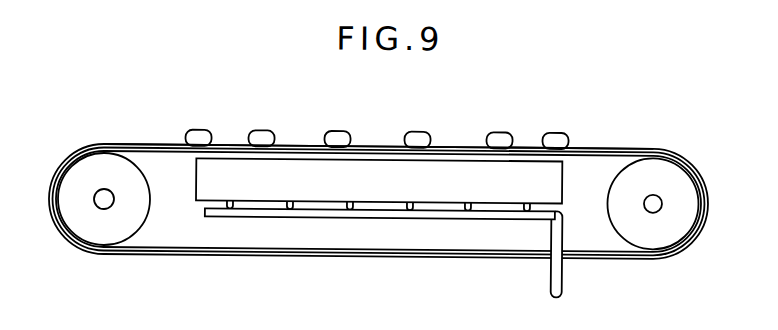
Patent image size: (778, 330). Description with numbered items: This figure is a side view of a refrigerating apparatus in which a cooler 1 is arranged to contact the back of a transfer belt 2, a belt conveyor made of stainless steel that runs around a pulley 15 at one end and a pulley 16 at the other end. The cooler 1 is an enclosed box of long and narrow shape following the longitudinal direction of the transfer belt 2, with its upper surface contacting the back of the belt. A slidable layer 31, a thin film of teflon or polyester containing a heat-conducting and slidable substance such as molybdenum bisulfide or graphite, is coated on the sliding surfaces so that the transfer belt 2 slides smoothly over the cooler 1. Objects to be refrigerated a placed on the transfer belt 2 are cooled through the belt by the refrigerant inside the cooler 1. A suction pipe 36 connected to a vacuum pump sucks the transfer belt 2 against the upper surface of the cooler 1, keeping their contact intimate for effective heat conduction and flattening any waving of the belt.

The cooler 1 is at (371, 158).
The transfer belt 2 is at (292, 143).
The object to be refrigerated a is at (488, 131).
The drive pulley 15 is at (73, 175).
The idler pulley 16 is at (682, 170).
The slidable layer 31 is at (588, 149).
The suction pipe 36 is at (382, 216).